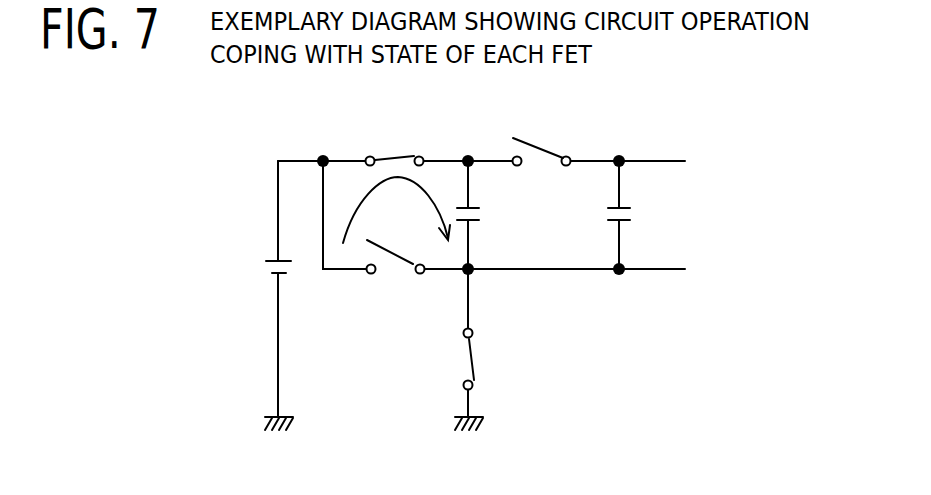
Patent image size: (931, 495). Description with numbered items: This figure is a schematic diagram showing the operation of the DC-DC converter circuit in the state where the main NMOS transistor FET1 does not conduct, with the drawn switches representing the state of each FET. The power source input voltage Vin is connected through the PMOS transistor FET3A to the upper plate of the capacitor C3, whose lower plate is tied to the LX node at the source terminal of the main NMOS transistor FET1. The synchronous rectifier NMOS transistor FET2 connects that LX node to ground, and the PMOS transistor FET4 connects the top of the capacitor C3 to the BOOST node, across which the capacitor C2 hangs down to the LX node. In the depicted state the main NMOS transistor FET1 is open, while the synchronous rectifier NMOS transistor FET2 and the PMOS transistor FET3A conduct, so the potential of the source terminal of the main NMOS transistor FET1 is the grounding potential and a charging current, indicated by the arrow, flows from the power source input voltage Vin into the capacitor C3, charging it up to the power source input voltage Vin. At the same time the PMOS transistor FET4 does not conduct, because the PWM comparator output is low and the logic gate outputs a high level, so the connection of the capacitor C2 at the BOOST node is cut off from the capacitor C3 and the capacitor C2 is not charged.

The main NMOS transistor FET1 is at (396, 273).
The synchronous rectifier NMOS transistor FET2 is at (503, 359).
The PMOS transistor FET3A is at (384, 138).
The PMOS transistor FET4 is at (542, 138).
The capacitor C2 is at (636, 217).
The capacitor C3 is at (485, 217).
The power source input voltage Vin is at (258, 262).
The BOOST terminal BOOST is at (691, 162).
The LX terminal LX is at (671, 274).